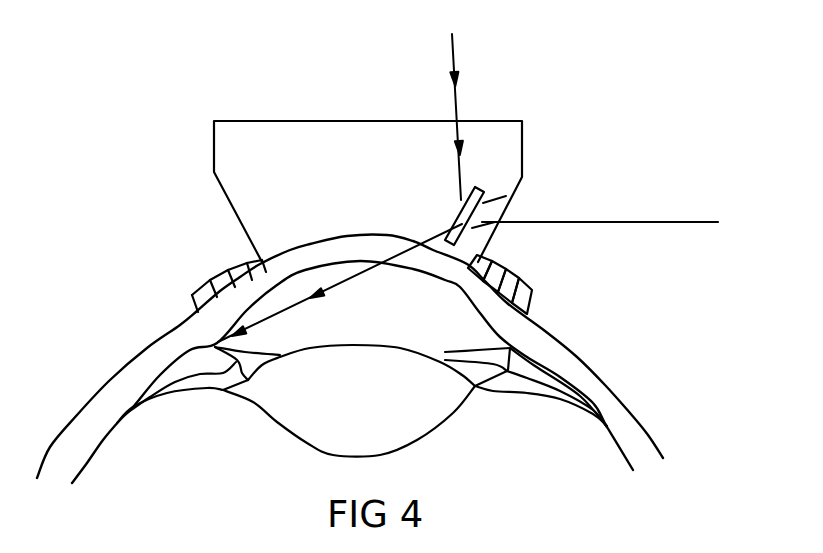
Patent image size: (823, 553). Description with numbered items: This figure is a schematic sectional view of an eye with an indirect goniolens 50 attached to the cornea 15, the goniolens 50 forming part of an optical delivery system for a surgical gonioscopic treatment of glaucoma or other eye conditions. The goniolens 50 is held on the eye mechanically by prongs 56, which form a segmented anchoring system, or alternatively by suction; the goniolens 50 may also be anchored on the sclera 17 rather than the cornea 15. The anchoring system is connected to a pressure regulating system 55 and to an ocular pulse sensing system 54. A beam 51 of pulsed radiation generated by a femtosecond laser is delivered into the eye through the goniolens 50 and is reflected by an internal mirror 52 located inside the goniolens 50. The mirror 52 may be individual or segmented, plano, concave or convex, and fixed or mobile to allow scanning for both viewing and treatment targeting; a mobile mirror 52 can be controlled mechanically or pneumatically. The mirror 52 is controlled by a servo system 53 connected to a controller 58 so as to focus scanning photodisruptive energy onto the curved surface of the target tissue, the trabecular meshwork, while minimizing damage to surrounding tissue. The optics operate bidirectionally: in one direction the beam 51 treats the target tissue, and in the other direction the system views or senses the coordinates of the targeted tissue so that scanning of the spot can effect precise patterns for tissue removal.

The cornea 15 is at (232, 304).
The sclera 17 is at (112, 393).
The indirect goniolens 50 is at (368, 191).
The beam 51 is at (455, 53).
The mirror 52 is at (490, 218).
The servo system 53 is at (482, 220).
The ocular pulse sensing system 54 is at (492, 261).
The pressure regulating system 55 is at (508, 270).
The prongs 56 is at (543, 278).
The controller 58 is at (677, 221).